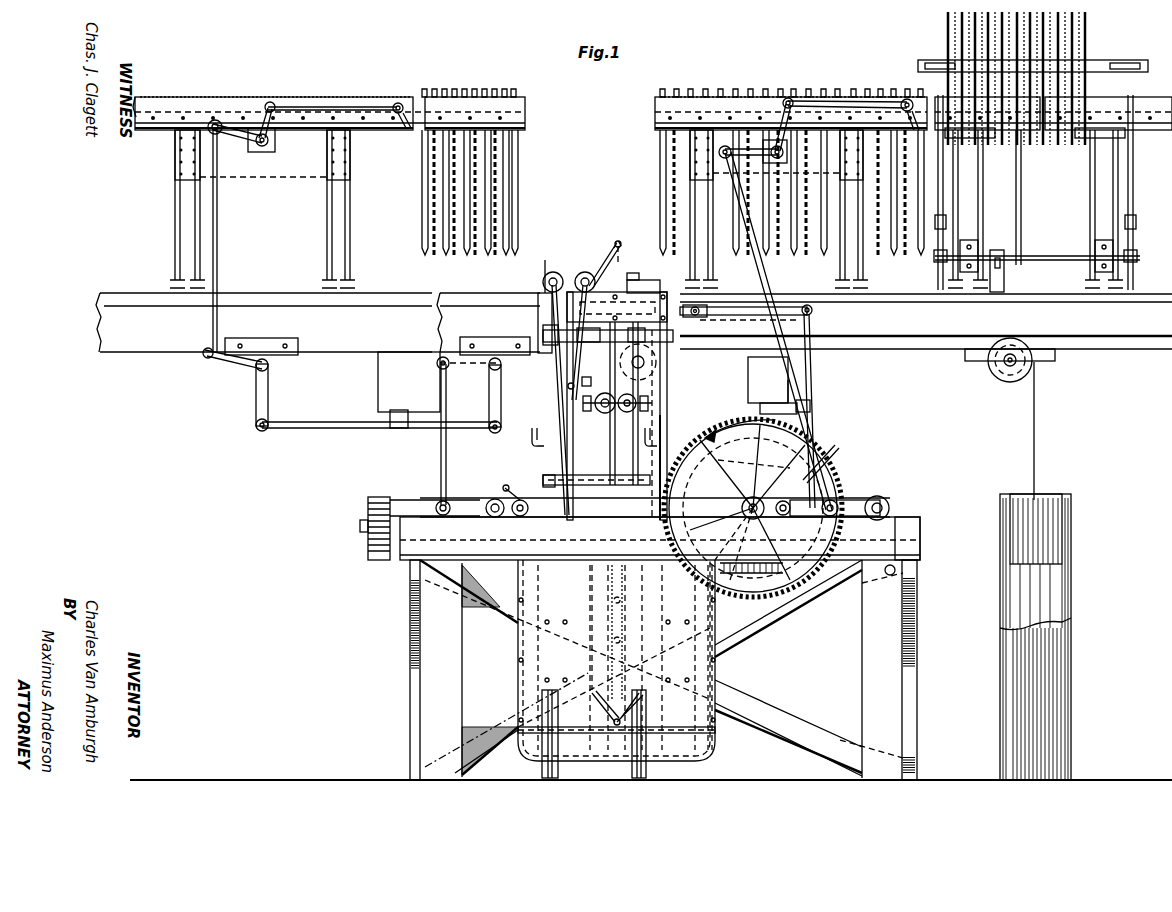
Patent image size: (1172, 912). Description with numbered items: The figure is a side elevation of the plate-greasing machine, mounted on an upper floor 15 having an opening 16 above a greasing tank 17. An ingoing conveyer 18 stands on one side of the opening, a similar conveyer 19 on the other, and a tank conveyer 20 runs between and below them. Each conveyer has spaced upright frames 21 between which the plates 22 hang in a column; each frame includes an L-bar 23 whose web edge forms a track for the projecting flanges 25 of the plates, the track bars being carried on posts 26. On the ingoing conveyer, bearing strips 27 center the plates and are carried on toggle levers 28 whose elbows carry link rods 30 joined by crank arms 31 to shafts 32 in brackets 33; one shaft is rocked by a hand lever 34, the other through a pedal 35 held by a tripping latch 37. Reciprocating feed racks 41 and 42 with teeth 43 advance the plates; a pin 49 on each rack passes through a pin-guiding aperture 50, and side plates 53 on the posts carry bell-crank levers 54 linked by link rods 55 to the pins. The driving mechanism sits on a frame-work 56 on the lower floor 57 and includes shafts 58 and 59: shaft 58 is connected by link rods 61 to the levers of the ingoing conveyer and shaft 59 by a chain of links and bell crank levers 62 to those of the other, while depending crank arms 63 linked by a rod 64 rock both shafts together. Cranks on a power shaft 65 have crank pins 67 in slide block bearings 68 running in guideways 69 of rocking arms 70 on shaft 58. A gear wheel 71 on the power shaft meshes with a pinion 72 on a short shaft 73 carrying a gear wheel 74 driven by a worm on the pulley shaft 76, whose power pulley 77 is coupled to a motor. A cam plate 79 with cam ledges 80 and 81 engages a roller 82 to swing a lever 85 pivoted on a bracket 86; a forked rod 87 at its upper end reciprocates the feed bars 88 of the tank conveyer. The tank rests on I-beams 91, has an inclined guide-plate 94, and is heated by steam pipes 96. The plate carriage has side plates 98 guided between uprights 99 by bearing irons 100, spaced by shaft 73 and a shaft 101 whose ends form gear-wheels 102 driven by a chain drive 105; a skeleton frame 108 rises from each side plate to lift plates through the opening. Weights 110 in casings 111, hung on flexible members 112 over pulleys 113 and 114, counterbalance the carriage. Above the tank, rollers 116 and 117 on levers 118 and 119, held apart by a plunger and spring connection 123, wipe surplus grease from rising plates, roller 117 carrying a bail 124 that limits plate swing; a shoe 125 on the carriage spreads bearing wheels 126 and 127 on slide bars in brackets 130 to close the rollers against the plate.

The upper floor 15 is at (100, 296).
The opening 16 is at (542, 300).
The greasing tank 17 is at (566, 392).
The ingoing conveyer 18 is at (792, 83).
The outgoing conveyer 19 is at (275, 85).
The tank conveyer 20 is at (622, 275).
The upright frames 21 is at (525, 105).
The plates 22 is at (452, 255).
The L-bar 23 is at (525, 127).
The projecting flanges 25 is at (946, 14).
The posts 26 is at (178, 236).
The bearing strips 27 is at (1100, 65).
The toggle levers 28 is at (937, 80).
The link rods 30 is at (940, 168).
The crank arms 31 is at (937, 258).
The shafts 32 is at (1050, 255).
The brackets 33 is at (975, 244).
The hand lever 34 is at (1021, 163).
The pedal 35 is at (1004, 282).
The tripping latch 37 is at (1002, 264).
The feed racks 41 is at (675, 90).
The feed racks 42 is at (140, 100).
The teeth 43 is at (326, 97).
The pin 49 is at (400, 104).
The pin-guiding aperture 50 is at (405, 127).
The side plates 53 is at (352, 106).
The bell-crank lever 54 is at (272, 120).
The link rod 55 is at (840, 100).
The frame-work 56 is at (760, 668).
The lower floor 57 is at (350, 779).
The shaft 58 is at (885, 501).
The shaft 59 is at (495, 503).
The link rods 61 is at (808, 440).
The chain of links and bell crank levers 62 is at (218, 256).
The crank arms 63 is at (920, 550).
The rod 64 is at (832, 600).
The power shaft 65 is at (753, 497).
The crank pins 67 is at (783, 516).
The slide block bearings 68 is at (826, 516).
The guideways 69 is at (752, 520).
The rocking arms 70 is at (720, 498).
The gear wheel 71 is at (728, 426).
The pinion 72 is at (667, 418).
The short shaft 73 is at (652, 440).
The gear wheel 74 is at (639, 632).
The pulley shaft 76 is at (418, 516).
The power pulley 77 is at (368, 518).
The cam plate 79 is at (818, 470).
The cam ledge 80 is at (747, 502).
The cam ledge 81 is at (714, 593).
The roller 82 is at (840, 500).
The lever 85 is at (812, 365).
The bracket 86 is at (810, 404).
The forked rod 87 is at (760, 316).
The feed bars 88 is at (743, 320).
The I-beams 91 is at (917, 546).
The inclined guide-plate 94 is at (643, 278).
The steam pipes 96 is at (594, 428).
The side plates 98 is at (530, 644).
The uprights 99 is at (632, 764).
The bearing iron 100 is at (616, 733).
The shaft 101 is at (533, 492).
The gear-wheels 102 is at (499, 483).
The chain drive 105 is at (586, 610).
The skeleton frame 108 is at (664, 385).
The weights 110 is at (1035, 637).
The containing casings 111 is at (1068, 624).
The flexible members 112 is at (1035, 436).
The pulley 113 is at (1024, 345).
The pulley 114 is at (657, 360).
The roller 116 is at (558, 275).
The roller 117 is at (590, 272).
The lever 118 is at (560, 365).
The lever 119 is at (578, 368).
The plunger and spring connection 123 is at (591, 375).
The bail or guide rod 124 is at (616, 246).
The shoe 125 is at (555, 478).
The bearing wheel 126 is at (600, 412).
The bearing wheel 127 is at (624, 412).
The brackets 130 is at (652, 403).